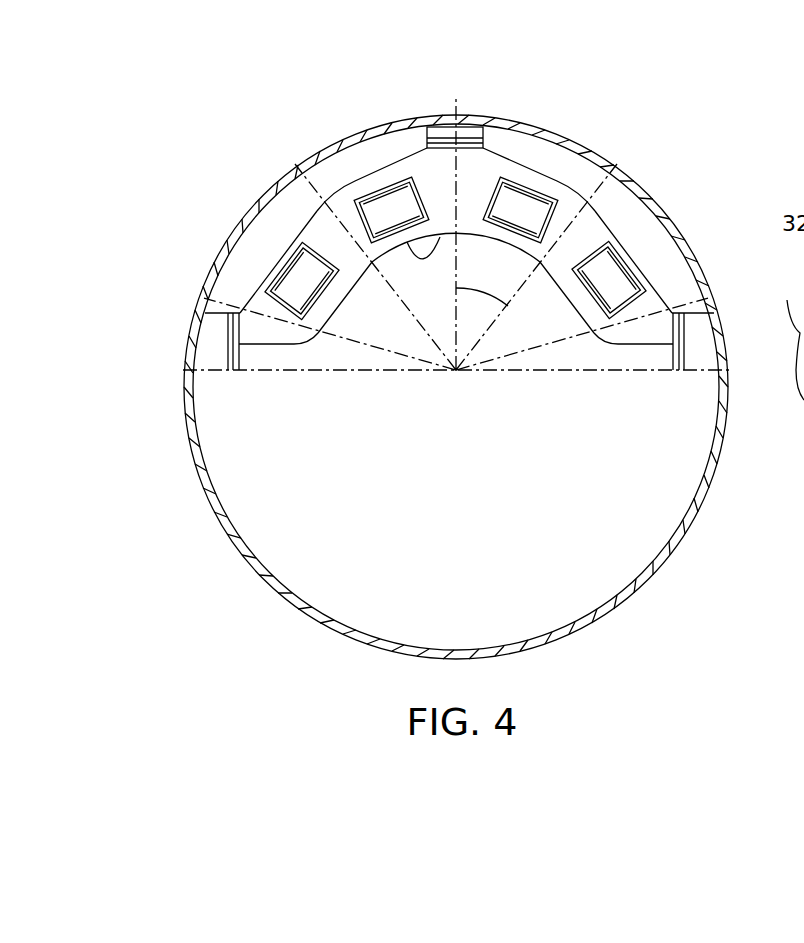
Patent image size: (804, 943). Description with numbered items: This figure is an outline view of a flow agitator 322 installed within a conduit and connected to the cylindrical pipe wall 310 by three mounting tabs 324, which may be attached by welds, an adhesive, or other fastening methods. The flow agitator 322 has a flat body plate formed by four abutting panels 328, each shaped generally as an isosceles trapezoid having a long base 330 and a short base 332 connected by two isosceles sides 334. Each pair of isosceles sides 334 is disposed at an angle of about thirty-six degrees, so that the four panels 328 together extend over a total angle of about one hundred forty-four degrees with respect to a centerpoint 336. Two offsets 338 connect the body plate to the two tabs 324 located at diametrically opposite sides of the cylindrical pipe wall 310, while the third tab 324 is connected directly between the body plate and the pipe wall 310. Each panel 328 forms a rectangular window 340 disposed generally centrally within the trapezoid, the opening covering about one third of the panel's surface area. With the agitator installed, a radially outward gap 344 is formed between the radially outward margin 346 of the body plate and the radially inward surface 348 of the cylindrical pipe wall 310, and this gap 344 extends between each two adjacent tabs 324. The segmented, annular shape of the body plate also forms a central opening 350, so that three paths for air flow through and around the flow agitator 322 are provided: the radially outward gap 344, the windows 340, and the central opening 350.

The cylindrical pipe wall 310 is at (378, 128).
The flow agitator 322 is at (611, 162).
The mounting tab 324 is at (465, 128).
The panel 328 is at (370, 193).
The long base 330 is at (545, 172).
The short base 332 is at (365, 192).
The isosceles side 334 is at (418, 130).
The centerpoint 336 is at (458, 372).
The offset 338 is at (297, 332).
The rectangular window 340 is at (607, 228).
The radially outward gap 344 is at (232, 282).
The radially outward margin 346 is at (243, 257).
The radially inward surface 348 is at (255, 230).
The central opening 350 is at (376, 320).